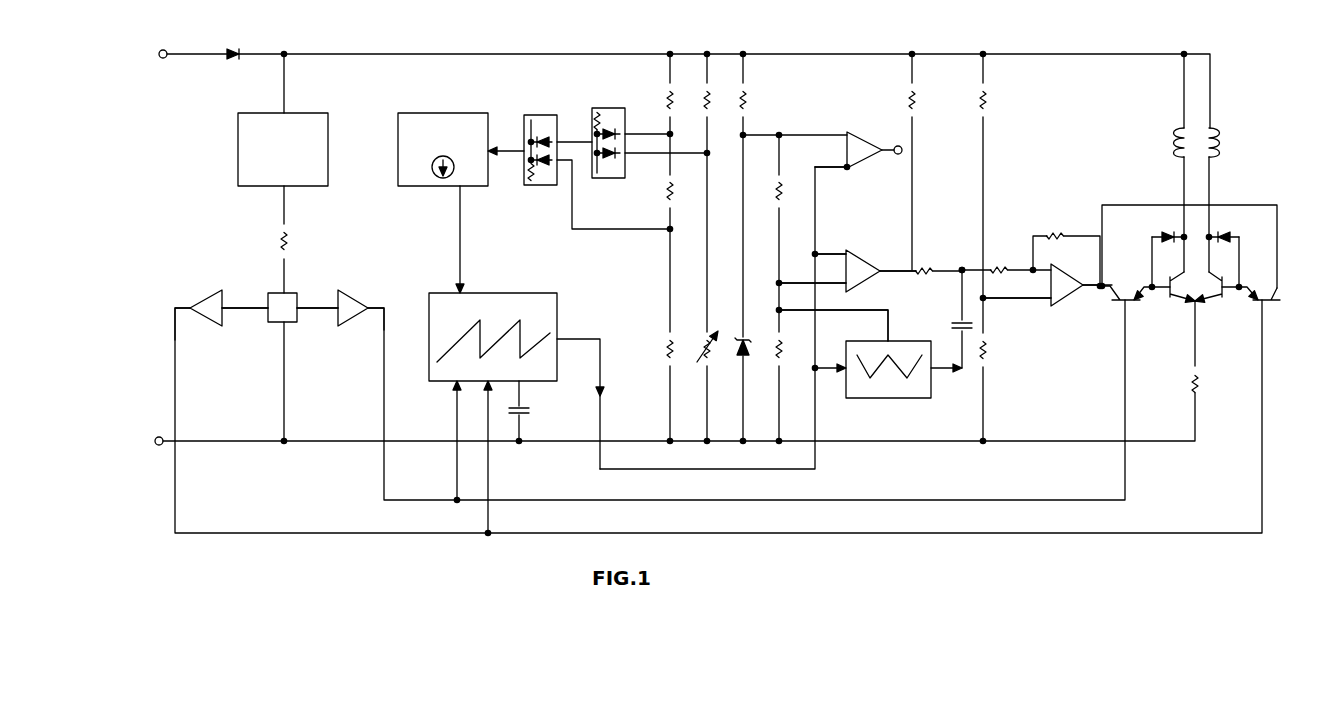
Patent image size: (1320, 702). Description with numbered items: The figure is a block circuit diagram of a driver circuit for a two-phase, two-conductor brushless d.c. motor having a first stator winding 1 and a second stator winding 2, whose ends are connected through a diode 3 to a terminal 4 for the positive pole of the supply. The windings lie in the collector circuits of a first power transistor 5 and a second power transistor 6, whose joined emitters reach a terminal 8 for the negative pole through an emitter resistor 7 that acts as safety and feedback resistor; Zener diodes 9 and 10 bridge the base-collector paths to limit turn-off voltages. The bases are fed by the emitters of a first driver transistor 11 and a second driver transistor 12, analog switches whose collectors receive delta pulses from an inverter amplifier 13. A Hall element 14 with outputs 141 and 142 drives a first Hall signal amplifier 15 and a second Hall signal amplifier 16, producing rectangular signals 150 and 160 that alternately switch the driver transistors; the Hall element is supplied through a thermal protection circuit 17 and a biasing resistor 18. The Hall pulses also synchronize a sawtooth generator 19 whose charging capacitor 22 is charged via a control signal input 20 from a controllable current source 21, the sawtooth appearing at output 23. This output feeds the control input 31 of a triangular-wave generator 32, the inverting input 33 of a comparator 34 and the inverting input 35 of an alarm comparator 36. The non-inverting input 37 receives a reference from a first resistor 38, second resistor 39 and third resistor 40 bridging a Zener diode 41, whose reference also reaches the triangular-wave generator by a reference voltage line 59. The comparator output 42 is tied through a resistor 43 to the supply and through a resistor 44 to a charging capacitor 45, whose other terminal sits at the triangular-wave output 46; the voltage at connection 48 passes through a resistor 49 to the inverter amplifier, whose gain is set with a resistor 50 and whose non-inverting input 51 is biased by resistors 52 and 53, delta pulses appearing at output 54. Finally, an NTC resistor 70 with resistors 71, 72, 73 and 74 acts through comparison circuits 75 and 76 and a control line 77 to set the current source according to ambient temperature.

The first stator winding 1 is at (1176, 144).
The second stator winding 2 is at (1218, 144).
The diode 3 is at (240, 50).
The terminal 4 is at (170, 50).
The first power transistor 5 is at (1168, 300).
The second power transistor 6 is at (1224, 300).
The emitter resistor 7 is at (1200, 386).
The terminal 8 is at (170, 436).
The Zener diode 9 is at (1162, 234).
The Zener diode 10 is at (1232, 235).
The first driver transistor 11 is at (1118, 312).
The second driver transistor 12 is at (1266, 304).
The inverter amplifier 13 is at (1064, 300).
The Hall element 14 is at (297, 318).
The first Hall signal amplifier 15 is at (348, 300).
The second Hall signal amplifier 16 is at (208, 292).
The thermal protection circuit 17 is at (300, 131).
The biasing resistor 18 is at (288, 240).
The sawtooth generator 19 is at (545, 305).
The control signal input 20 is at (463, 290).
The controllable current source 21 is at (436, 131).
The charging capacitor 22 is at (530, 412).
The output 23 is at (559, 340).
The control input 31 is at (822, 372).
The triangular-wave generator 32 is at (885, 398).
The inverting input 33 is at (845, 254).
The comparator 34 is at (864, 266).
The inverting input 35 is at (846, 170).
The alarm comparator 36 is at (861, 138).
The non-inverting input 37 is at (848, 290).
The first resistor 38 is at (783, 346).
The second resistor 39 is at (781, 194).
The third resistor 40 is at (746, 100).
The Zener diode 41 is at (746, 352).
The output 42 is at (880, 273).
The resistor 43 is at (915, 98).
The resistor 44 is at (930, 262).
The charging capacitor 45 is at (952, 326).
The output 46 is at (938, 372).
The connection 48 is at (962, 266).
The resistor 49 is at (1004, 264).
The resistor 50 is at (1066, 233).
The non-inverting input 51 is at (1050, 304).
The resistor 52 is at (985, 352).
The resistor 53 is at (990, 98).
The output 54 is at (1086, 283).
The reference voltage line 59 is at (850, 311).
The NTC resistor 70 is at (699, 362).
The resistor 71 is at (709, 96).
The resistor 72 is at (668, 348).
The resistor 73 is at (668, 190).
The resistor 74 is at (668, 96).
The comparison circuit 75 is at (606, 110).
The comparison circuit 76 is at (538, 114).
The control line 77 is at (509, 148).
The output 141 is at (243, 306).
The output 142 is at (318, 306).
The rectangular signal 150 is at (384, 306).
The rectangular signal 160 is at (175, 306).